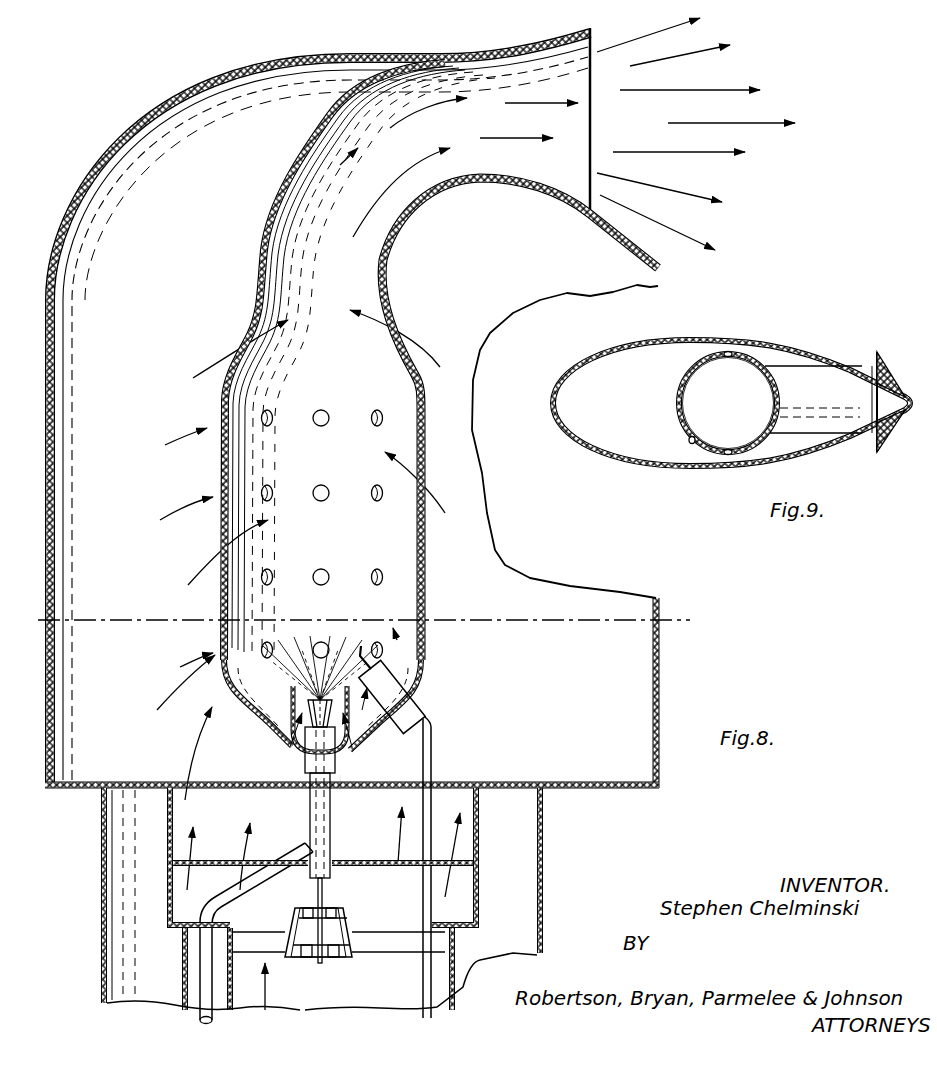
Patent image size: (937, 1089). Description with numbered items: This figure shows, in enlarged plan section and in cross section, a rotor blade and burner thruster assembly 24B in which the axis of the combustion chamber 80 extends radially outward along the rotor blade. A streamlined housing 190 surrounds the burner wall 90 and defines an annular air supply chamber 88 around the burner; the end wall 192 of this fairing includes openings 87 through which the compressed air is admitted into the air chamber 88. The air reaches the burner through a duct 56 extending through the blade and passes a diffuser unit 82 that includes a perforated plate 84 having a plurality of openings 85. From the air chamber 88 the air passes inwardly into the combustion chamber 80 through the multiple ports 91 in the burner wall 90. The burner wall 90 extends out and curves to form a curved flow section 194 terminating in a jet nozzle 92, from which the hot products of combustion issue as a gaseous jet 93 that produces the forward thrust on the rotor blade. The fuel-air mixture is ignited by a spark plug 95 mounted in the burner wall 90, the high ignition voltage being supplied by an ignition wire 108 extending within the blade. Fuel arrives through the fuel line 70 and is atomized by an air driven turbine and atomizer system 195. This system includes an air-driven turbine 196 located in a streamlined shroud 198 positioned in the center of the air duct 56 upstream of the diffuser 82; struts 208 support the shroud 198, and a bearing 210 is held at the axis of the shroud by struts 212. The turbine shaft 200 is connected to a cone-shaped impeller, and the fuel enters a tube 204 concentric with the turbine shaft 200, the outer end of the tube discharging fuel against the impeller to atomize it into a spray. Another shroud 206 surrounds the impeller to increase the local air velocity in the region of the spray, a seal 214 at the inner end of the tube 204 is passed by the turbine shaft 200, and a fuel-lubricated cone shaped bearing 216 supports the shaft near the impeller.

In FIG. 8, the rotor blade and burner thruster assembly 24B is at (140, 118).
In FIG. 8, the streamlined housing 190 is at (106, 163).
In FIG. 9, the streamlined housing 190 is at (626, 456).
In FIG. 8, the end wall 192 is at (605, 789).
In FIG. 8, the annular air supply chamber 88 is at (177, 281).
In FIG. 9, the annular air supply chamber 88 is at (655, 397).
In FIG. 8, the curved flow section 194 is at (280, 182).
In FIG. 9, the curved flow section 194 is at (797, 364).
In FIG. 8, the jet nozzle 92 is at (590, 28).
In FIG. 9, the jet nozzle 92 is at (862, 360).
In FIG. 8, the gaseous jet 93 is at (705, 58).
In FIG. 8, the combustion chamber 80 is at (405, 464).
In FIG. 9, the combustion chamber 80 is at (741, 404).
In FIG. 9, the burner wall 90 is at (680, 420).
In FIG. 8, the openings 91 is at (218, 588).
In FIG. 9, the openings 91 is at (728, 350).
In FIG. 8, the spark plug 95 is at (418, 703).
In FIG. 8, the ignition wire 108 is at (434, 758).
In FIG. 8, the diffuser unit 82 is at (480, 838).
In FIG. 8, the perforated plate 84 is at (322, 895).
In FIG. 8, the openings 85 is at (340, 862).
In FIG. 8, the openings 87 is at (352, 787).
In FIG. 8, the air driven turbine and atomizer system 195 is at (338, 769).
In FIG. 8, the turbine shaft 200 is at (310, 828).
In FIG. 8, the tube 204 is at (310, 800).
In FIG. 8, the shroud 206 is at (300, 704).
In FIG. 8, the cone shaped bearing 216 is at (305, 750).
In FIG. 8, the bearing 210 is at (322, 962).
In FIG. 8, the air-driven turbine 196 is at (330, 908).
In FIG. 8, the streamlined shroud 198 is at (298, 922).
In FIG. 8, the struts 212 is at (305, 960).
In FIG. 8, the struts 208 is at (360, 955).
In FIG. 8, the seal 214 is at (266, 870).
In FIG. 8, the fuel line 70 is at (200, 980).
In FIG. 8, the duct 56 is at (233, 988).